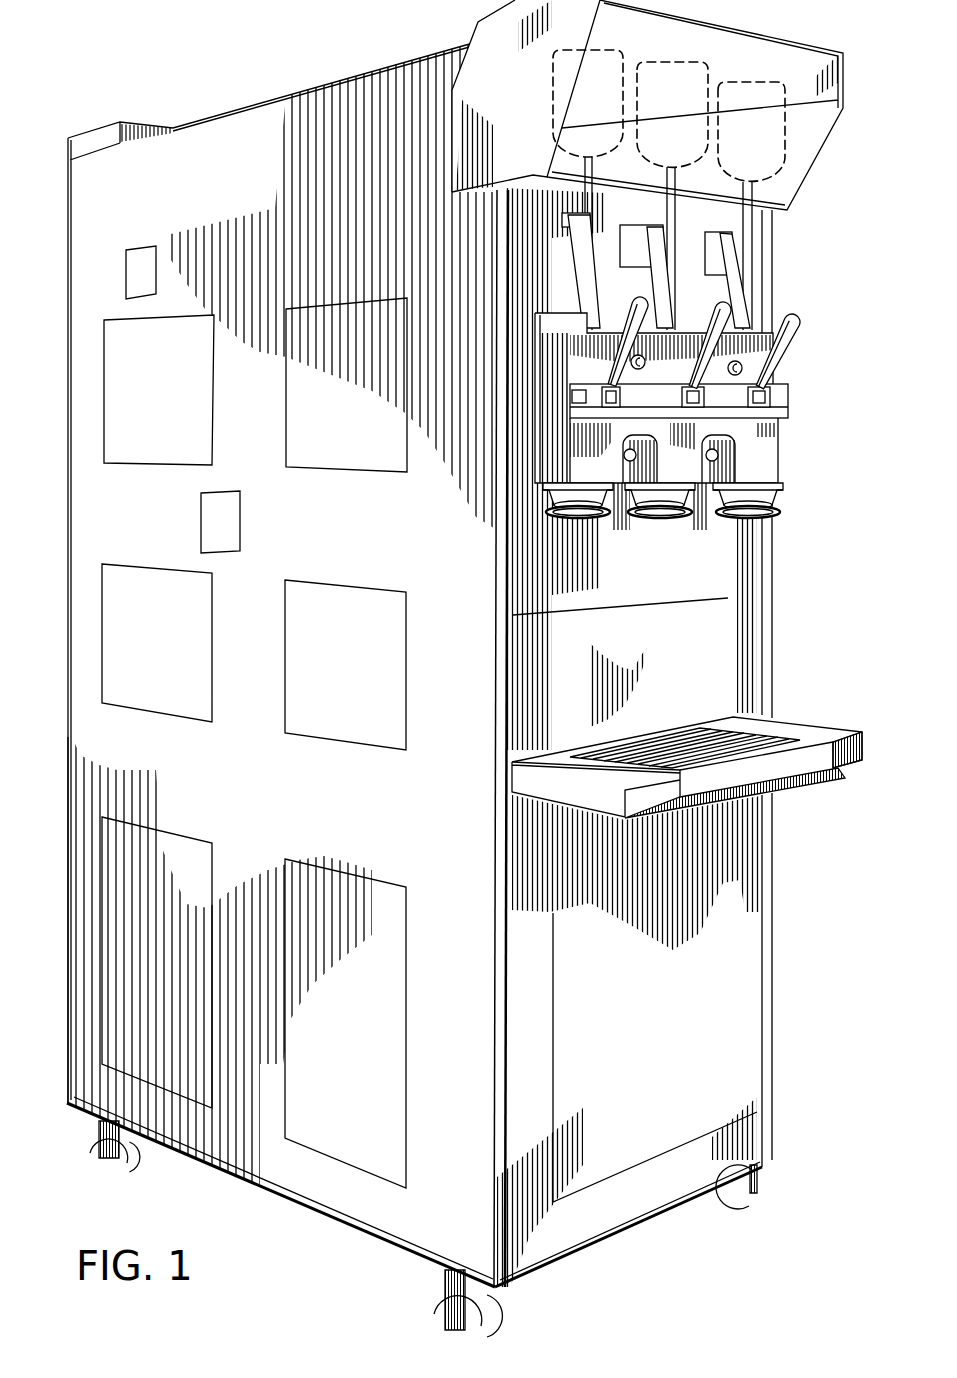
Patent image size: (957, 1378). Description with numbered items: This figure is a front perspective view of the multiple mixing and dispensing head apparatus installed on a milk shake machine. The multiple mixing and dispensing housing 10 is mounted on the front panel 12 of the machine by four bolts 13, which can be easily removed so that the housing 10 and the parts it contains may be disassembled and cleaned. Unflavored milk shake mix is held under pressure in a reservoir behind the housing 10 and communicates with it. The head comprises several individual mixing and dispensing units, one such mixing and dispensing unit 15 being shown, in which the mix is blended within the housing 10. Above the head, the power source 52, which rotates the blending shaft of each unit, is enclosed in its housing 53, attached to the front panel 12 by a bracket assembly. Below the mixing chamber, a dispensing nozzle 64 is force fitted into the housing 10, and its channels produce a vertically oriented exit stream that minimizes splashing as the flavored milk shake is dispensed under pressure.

The multiple mixing and dispensing housing 10 is at (790, 456).
The front panel 12 is at (685, 575).
The bolts 13 is at (722, 362).
The mixing and dispensing unit 15 is at (797, 346).
The power source 52 is at (772, 116).
The housing of the power source 53 is at (492, 80).
The dispensing nozzle 64 is at (776, 511).